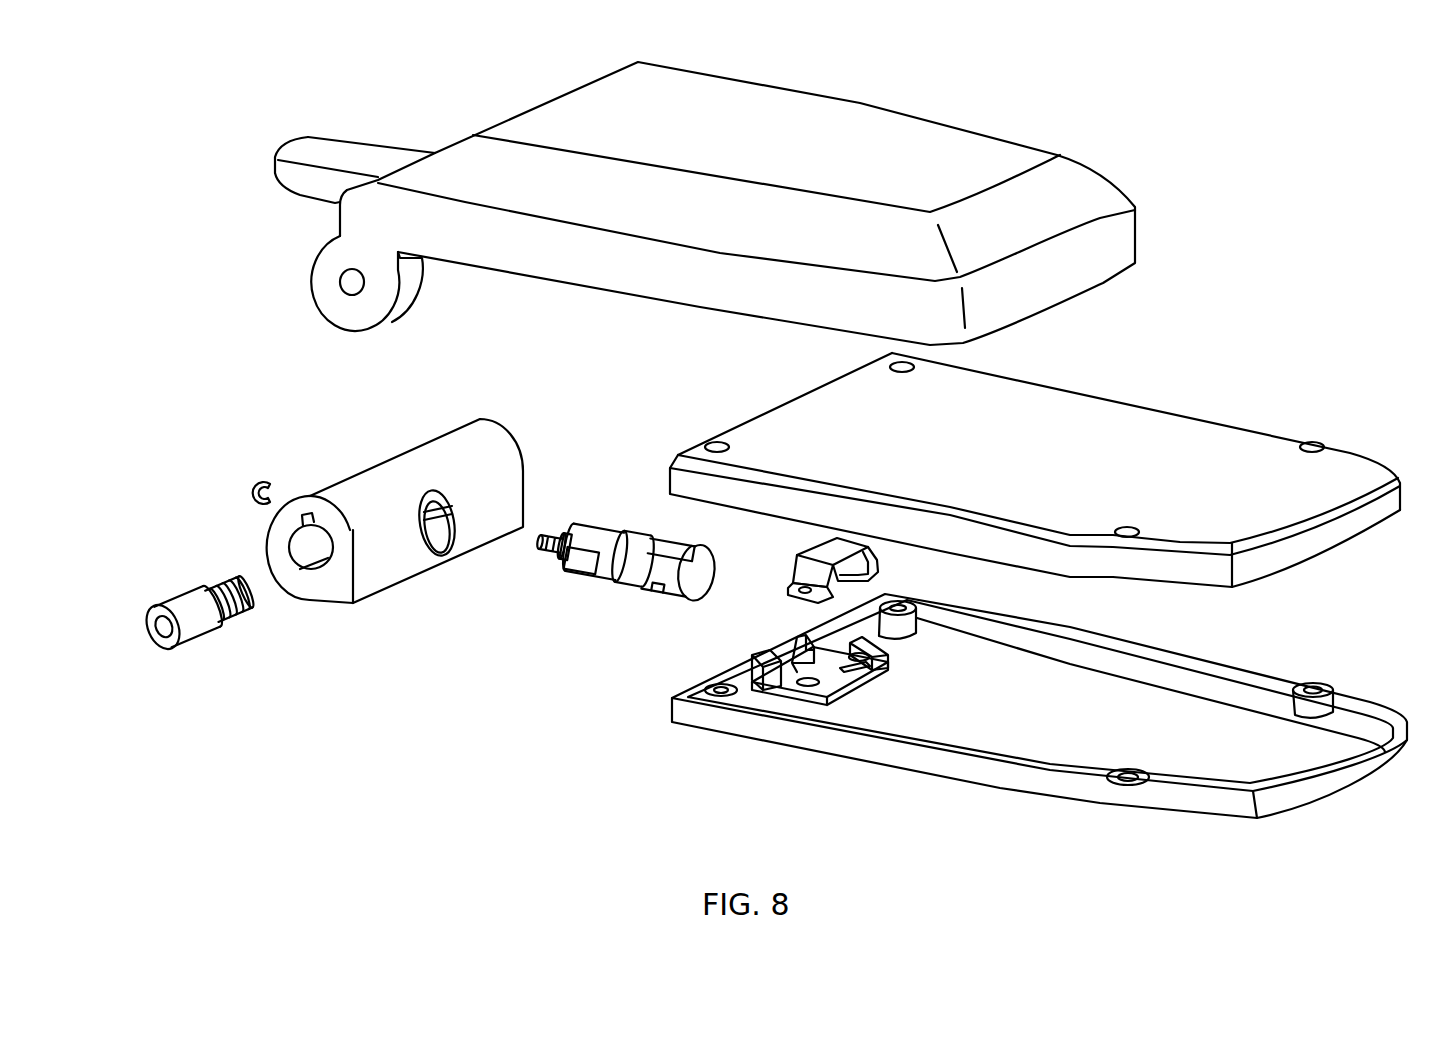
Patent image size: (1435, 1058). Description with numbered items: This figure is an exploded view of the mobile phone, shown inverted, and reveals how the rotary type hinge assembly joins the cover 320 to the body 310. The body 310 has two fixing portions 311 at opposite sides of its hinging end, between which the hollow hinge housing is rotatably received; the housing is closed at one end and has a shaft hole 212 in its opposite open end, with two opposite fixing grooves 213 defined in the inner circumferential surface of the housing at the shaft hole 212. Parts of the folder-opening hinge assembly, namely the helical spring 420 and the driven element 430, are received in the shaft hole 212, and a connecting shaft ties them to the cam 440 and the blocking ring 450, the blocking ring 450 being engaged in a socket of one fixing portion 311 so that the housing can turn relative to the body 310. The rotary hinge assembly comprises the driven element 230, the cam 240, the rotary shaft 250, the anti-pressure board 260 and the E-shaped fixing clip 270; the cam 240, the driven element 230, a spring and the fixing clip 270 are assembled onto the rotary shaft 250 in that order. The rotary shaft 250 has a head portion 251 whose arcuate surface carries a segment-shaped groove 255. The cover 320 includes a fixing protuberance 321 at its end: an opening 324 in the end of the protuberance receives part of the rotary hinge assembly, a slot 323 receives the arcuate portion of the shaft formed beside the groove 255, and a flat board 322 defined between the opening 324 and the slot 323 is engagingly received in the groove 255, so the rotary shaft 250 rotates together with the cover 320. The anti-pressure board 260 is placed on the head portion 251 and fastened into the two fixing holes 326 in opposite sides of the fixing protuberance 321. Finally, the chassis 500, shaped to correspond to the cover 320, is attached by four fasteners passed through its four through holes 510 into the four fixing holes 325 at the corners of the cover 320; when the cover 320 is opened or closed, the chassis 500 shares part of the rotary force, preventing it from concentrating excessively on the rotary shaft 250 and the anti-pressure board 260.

The body 310 is at (472, 163).
The fixing portions 311 is at (340, 300).
The chassis 500 is at (1158, 440).
The through holes 510 is at (717, 445).
The cover 320 is at (1183, 718).
The fixing holes 325 is at (1314, 686).
The fixing protuberance 321 is at (710, 733).
The flat board 322 is at (811, 686).
The slot 323 is at (840, 668).
The opening 324 is at (797, 657).
The fixing holes 326 is at (790, 680).
The anti-pressure board 260 is at (808, 562).
The driven element 230 is at (578, 575).
The cam 240 is at (633, 578).
The rotary shaft 250 is at (680, 584).
The head portion 251 is at (692, 548).
The segment-shaped groove 255 is at (660, 592).
The shaft hole 212 is at (285, 543).
The fixing grooves 213 is at (317, 577).
The E-shaped fixing clip 270 is at (257, 480).
The driven element 430 is at (203, 657).
The helical spring 420 is at (250, 600).
The cam 440 is at (200, 620).
The blocking ring 450 is at (157, 640).